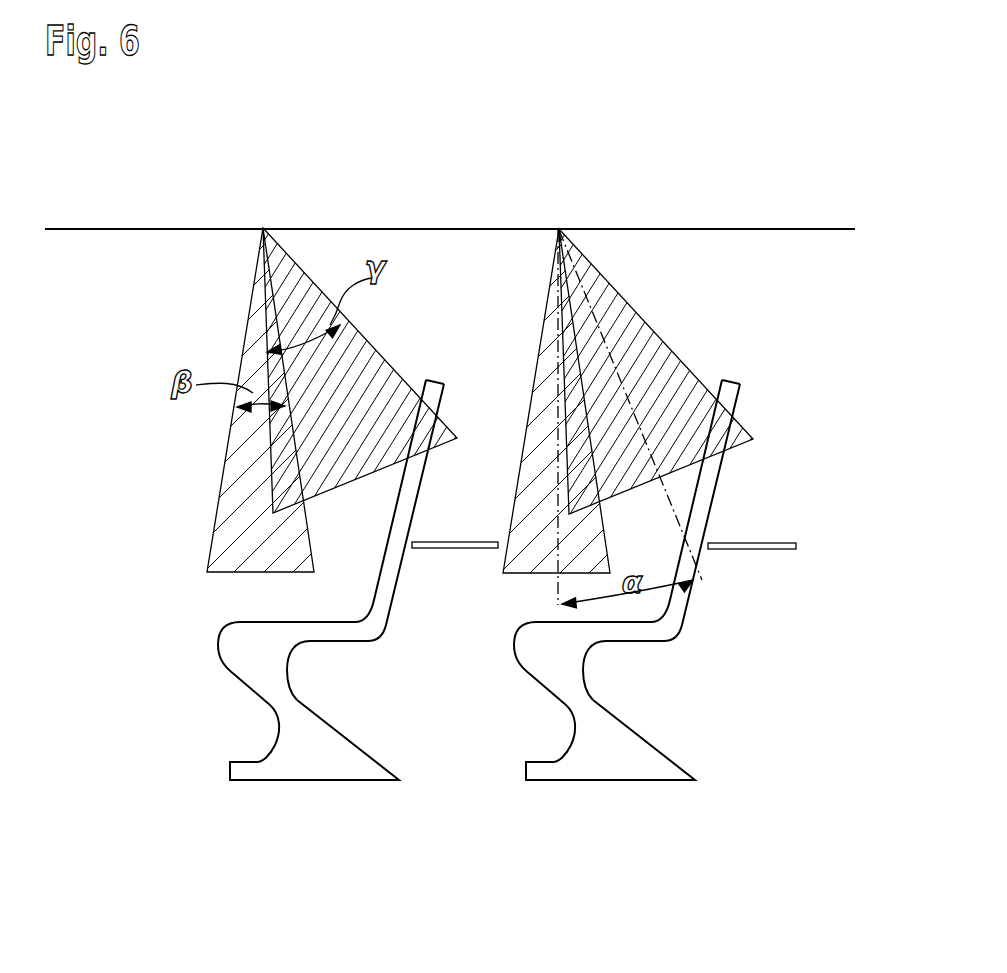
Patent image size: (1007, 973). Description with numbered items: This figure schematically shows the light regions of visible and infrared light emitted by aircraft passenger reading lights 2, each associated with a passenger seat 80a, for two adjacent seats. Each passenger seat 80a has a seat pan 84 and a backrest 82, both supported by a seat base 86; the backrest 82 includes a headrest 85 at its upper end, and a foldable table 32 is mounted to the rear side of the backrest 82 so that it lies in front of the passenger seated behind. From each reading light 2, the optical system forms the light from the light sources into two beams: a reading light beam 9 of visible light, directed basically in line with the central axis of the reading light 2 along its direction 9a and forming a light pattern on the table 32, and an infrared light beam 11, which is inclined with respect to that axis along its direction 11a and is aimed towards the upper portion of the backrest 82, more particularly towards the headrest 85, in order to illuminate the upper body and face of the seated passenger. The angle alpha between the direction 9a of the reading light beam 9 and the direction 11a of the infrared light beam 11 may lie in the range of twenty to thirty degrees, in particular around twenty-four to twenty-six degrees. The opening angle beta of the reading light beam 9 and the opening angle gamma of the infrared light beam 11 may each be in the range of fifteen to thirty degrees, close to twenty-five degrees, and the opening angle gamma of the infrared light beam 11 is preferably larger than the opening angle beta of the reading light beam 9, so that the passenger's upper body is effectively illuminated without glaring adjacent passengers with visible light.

The aircraft passenger reading light 2 is at (263, 228).
The reading light beam 9 is at (185, 566).
The direction of the reading light beam 9a is at (549, 360).
The infrared light beam 11 is at (384, 329).
The direction of the infrared light beam 11a is at (678, 512).
The foldable table 32 is at (438, 548).
The passenger seat 80a is at (475, 573).
The backrest 82 is at (442, 482).
The seat pan 84 is at (328, 632).
The headrest 85 is at (428, 393).
The seat base 86 is at (302, 763).